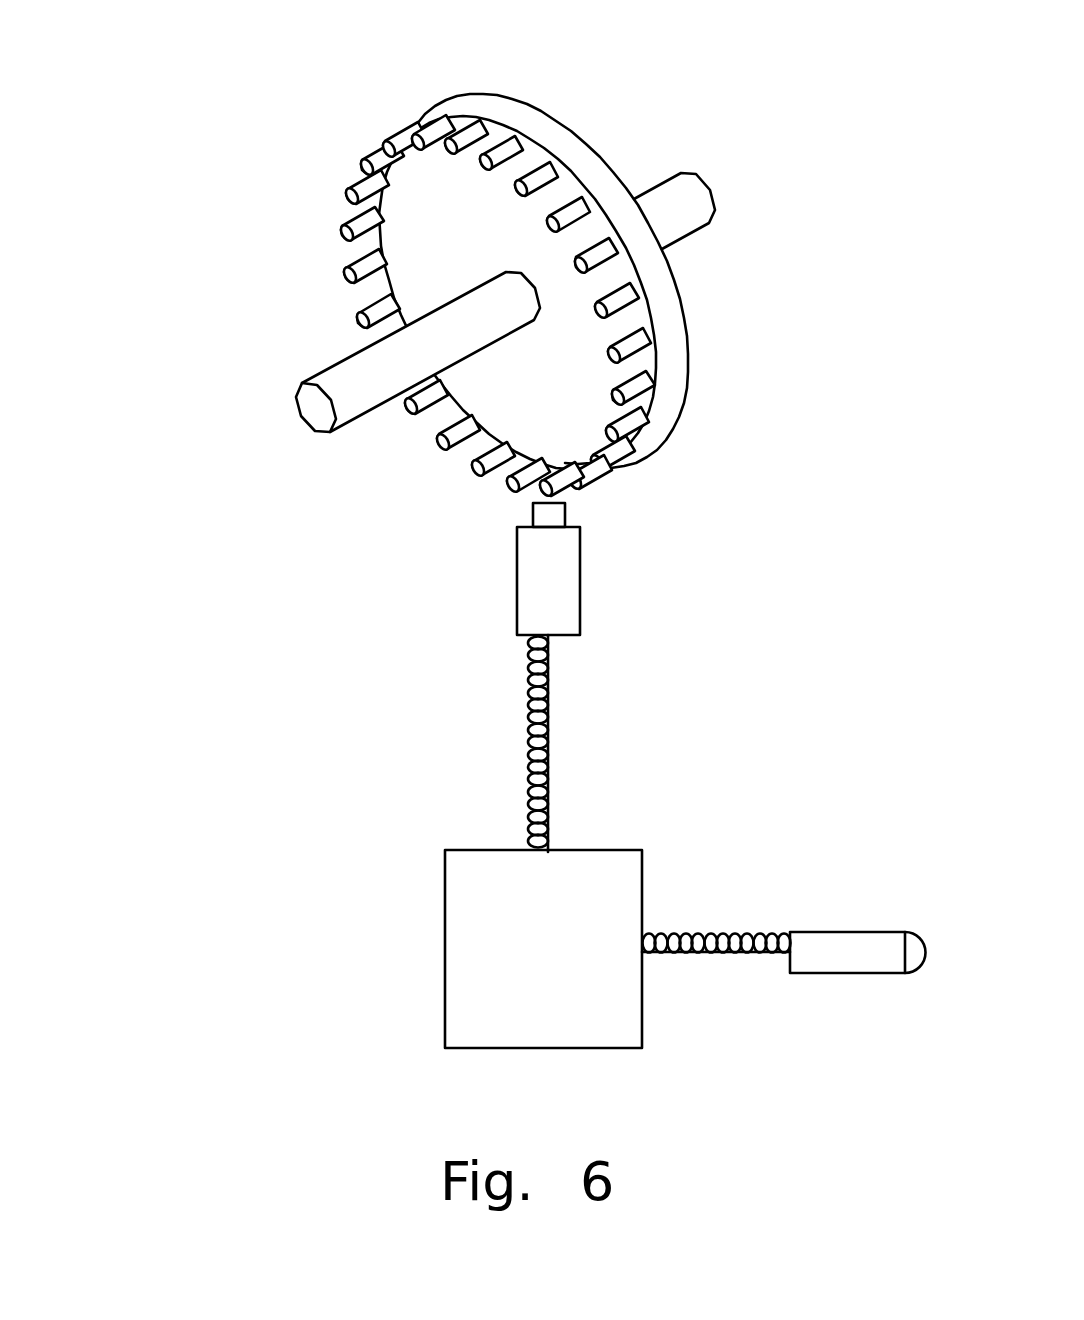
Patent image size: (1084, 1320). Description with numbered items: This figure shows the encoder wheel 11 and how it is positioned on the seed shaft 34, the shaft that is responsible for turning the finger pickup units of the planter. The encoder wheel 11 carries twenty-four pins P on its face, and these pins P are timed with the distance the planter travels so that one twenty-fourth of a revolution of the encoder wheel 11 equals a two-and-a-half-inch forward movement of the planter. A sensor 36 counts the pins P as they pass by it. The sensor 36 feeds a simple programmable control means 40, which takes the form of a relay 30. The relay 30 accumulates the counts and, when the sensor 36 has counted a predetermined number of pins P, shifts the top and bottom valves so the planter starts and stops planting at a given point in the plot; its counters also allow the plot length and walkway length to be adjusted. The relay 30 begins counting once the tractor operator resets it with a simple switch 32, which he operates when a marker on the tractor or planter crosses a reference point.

The encoder wheel 11 is at (385, 249).
The pins P is at (558, 200).
The seed shaft 34 is at (692, 198).
The sensor 36 is at (557, 585).
The programmable control means 40 is at (387, 508).
The relay 30 is at (573, 897).
The switch 32 is at (853, 955).